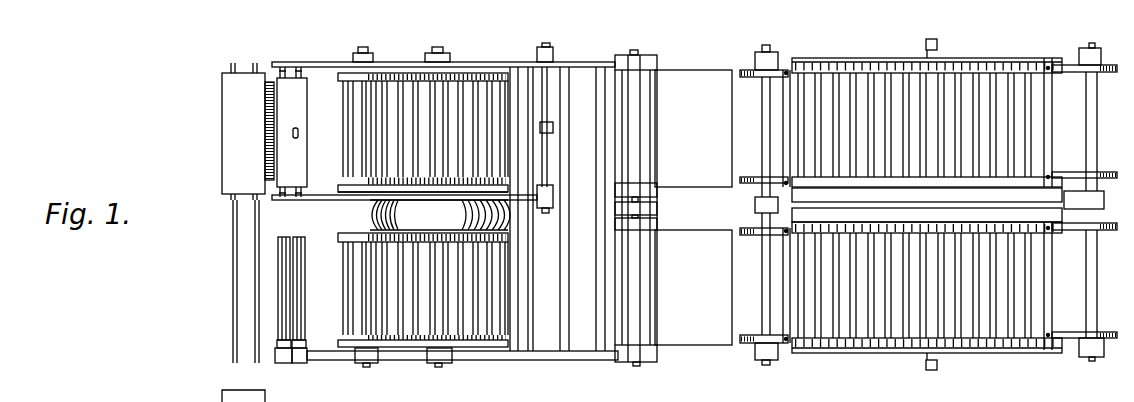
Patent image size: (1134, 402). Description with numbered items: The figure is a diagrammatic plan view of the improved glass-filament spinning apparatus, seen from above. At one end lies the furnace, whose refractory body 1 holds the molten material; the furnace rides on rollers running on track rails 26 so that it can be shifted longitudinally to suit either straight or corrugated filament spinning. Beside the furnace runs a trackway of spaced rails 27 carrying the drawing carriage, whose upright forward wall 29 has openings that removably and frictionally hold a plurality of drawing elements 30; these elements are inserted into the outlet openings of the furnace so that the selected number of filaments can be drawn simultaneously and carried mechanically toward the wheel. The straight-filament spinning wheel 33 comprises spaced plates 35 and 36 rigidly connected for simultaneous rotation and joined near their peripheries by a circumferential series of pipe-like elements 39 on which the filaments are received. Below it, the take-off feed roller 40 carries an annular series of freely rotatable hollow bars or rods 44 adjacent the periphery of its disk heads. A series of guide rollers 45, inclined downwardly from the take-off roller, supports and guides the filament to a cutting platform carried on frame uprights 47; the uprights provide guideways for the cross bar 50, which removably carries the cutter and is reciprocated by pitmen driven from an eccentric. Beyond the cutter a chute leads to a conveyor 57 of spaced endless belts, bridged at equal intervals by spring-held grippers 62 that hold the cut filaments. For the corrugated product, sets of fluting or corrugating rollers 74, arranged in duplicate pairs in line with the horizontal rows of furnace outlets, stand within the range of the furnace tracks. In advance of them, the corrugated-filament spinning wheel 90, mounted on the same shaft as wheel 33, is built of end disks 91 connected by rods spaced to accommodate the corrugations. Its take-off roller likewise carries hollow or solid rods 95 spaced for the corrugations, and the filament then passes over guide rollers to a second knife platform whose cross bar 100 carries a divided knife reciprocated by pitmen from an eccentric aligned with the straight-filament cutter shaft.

The body 1 is at (242, 158).
The track rails 26 is at (258, 277).
The rails 27 is at (345, 63).
The upright forward wall 29 is at (267, 158).
The drawing elements 30 is at (264, 105).
The spinning wheel 33 is at (455, 85).
The plate 35 is at (400, 77).
The plate 36 is at (350, 200).
The pipe-like elements 39 is at (478, 85).
The take-off feed roller 40 is at (347, 100).
The hollow bars or rods 44 is at (358, 115).
The guide rollers 45 is at (567, 343).
The frame uprights 47 is at (660, 57).
The cross bar 50 is at (627, 157).
The conveyor 57 is at (927, 204).
The grippers 62 is at (784, 128).
The fluting or corrugating rollers 74 is at (302, 342).
The spinning wheel 90 is at (375, 257).
The end disks 91 is at (505, 228).
The hollow or solid rods 95 is at (355, 280).
The cross bar 100 is at (637, 290).